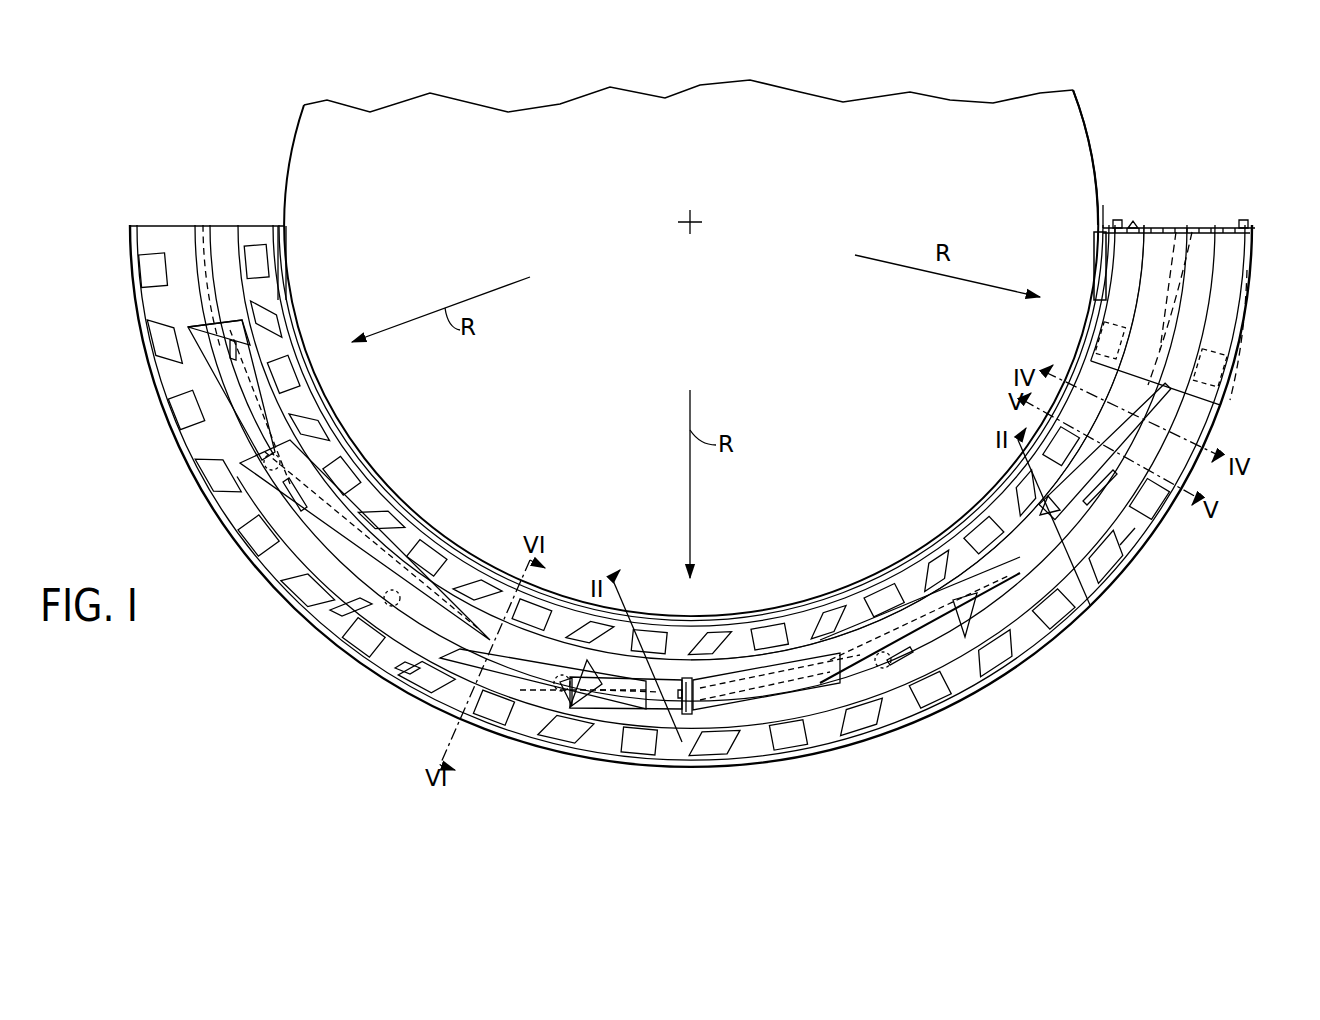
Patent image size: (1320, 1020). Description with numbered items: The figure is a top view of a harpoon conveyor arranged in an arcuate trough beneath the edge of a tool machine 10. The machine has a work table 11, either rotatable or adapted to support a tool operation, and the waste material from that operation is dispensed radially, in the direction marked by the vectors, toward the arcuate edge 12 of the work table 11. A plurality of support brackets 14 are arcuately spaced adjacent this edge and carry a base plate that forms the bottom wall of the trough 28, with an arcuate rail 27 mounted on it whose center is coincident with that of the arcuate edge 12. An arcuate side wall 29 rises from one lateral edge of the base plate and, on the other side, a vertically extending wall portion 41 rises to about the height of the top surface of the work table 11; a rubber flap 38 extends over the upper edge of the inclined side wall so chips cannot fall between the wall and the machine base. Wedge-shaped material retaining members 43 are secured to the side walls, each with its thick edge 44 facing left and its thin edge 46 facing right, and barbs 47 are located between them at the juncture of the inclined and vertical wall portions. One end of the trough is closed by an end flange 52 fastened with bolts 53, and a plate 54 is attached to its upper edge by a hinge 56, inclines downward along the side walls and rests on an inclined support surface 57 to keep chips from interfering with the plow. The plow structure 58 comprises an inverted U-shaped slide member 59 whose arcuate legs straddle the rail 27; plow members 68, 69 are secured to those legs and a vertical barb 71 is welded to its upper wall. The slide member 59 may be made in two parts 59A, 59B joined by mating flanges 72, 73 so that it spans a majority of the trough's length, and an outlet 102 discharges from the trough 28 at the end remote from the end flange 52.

The tool machine 10 is at (1132, 117).
The work table 11 is at (1103, 172).
The arcuate edge 12 is at (1104, 207).
The support brackets 14 is at (302, 360).
The arcuate rail 27 is at (205, 257).
The trough 28 is at (185, 263).
The arcuate side wall 29 is at (1002, 510).
The rubber flap 38 is at (1100, 290).
The vertically extending wall portion 41 is at (1127, 533).
The material retaining members 43 is at (180, 410).
The thick edge 44 is at (340, 635).
The thin edge 46 is at (395, 665).
The barbs 47 is at (268, 323).
The end flange 52 is at (1222, 228).
The bolts 53 is at (1250, 226).
The plate 54 is at (1222, 305).
The hinge 56 is at (1190, 245).
The inclined support surface 57 is at (1230, 345).
The plow structure 58 is at (385, 475).
The inverted U-shaped slide member 59 is at (530, 673).
The slide member part 59A is at (640, 702).
The slide member part 59B is at (735, 700).
The plow member 68 is at (322, 615).
The plow member 69 is at (410, 550).
The vertical barb 71 is at (200, 372).
The mating flange 72 is at (684, 716).
The mating flange 73 is at (692, 716).
The outlet 102 is at (195, 215).